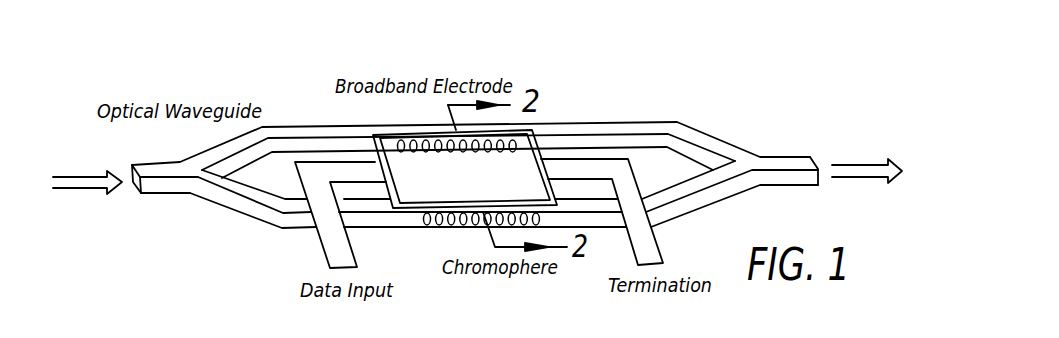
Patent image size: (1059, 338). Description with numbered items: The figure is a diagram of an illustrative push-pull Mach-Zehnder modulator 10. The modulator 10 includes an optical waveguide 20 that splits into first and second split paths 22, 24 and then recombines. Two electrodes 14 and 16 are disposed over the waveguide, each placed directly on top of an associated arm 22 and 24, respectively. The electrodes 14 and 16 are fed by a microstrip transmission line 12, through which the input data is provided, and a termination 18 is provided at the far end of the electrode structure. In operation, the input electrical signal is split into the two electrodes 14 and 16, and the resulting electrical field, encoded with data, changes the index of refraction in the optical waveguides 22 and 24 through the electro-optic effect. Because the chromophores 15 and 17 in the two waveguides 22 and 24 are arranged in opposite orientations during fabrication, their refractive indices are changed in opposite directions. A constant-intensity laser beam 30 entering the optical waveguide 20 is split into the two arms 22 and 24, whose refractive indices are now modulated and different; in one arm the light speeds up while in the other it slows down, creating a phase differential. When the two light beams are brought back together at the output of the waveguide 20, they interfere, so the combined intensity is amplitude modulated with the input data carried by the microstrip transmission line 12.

The modulator 10 is at (742, 78).
The microstrip transmission line 12 is at (337, 243).
The electrode 14 is at (375, 134).
The chromophores 15 is at (456, 130).
The electrode 16 is at (483, 212).
The chromophores 17 is at (434, 228).
The termination 18 is at (645, 250).
The optical waveguide 20 is at (799, 146).
The first split path 22 is at (597, 128).
The second split path 24 is at (611, 218).
The laser beam 30 is at (83, 182).